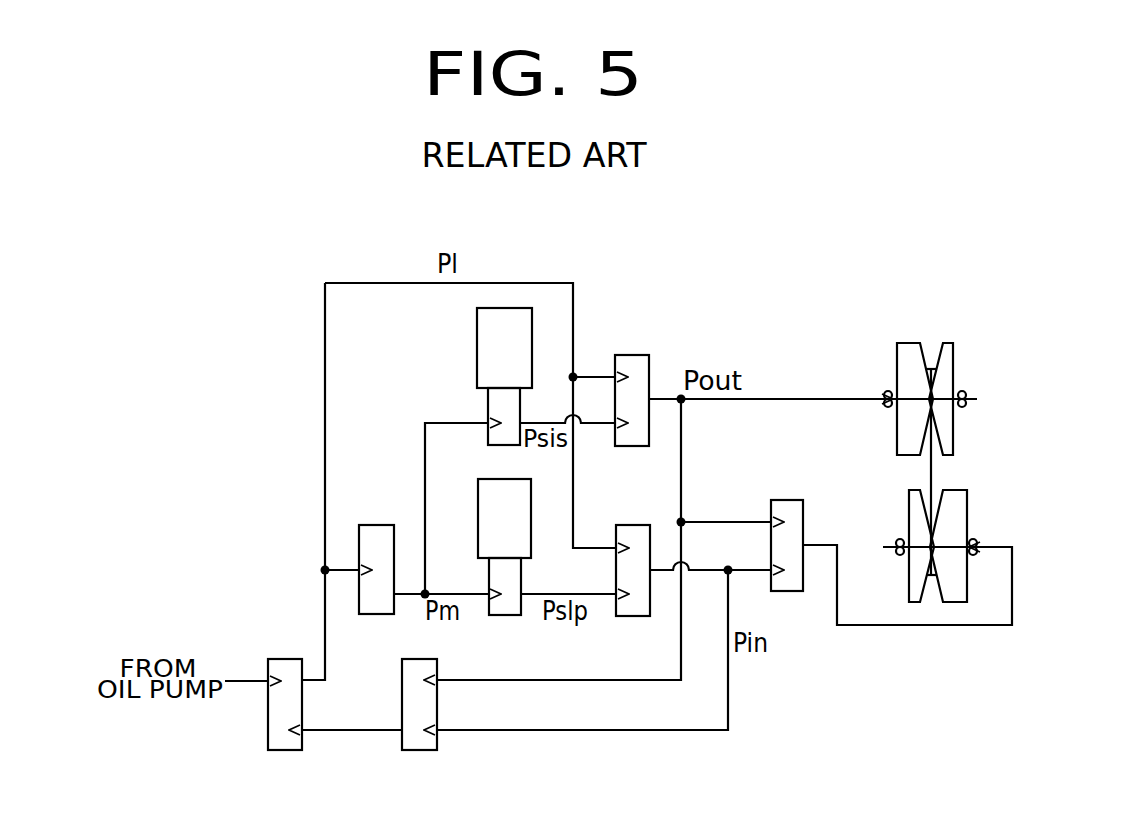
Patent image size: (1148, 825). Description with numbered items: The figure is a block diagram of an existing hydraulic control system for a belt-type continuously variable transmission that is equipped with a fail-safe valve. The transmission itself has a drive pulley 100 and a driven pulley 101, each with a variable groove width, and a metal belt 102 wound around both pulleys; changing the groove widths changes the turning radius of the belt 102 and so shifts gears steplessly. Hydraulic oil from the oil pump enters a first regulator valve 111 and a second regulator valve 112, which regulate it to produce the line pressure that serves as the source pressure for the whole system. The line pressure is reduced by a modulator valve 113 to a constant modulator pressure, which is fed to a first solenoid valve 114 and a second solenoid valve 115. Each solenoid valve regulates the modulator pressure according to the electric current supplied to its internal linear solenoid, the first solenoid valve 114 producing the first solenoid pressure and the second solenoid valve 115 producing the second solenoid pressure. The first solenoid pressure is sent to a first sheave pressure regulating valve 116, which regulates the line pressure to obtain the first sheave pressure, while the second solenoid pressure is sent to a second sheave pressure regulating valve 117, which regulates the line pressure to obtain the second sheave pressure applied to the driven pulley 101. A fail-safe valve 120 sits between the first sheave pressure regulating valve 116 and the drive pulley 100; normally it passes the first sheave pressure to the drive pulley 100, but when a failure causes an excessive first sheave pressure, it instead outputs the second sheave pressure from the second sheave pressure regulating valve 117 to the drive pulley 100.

The drive pulley 100 is at (909, 506).
The driven pulley 101 is at (897, 357).
The belt 102 is at (931, 471).
The first regulator valve 111 is at (268, 726).
The second regulator valve 112 is at (402, 705).
The modulator valve 113 is at (375, 525).
The first solenoid valve 114 is at (478, 507).
The second solenoid valve 115 is at (477, 345).
The first sheave pressure regulating valve 116 is at (632, 525).
The second sheave pressure regulating valve 117 is at (632, 355).
The fail-safe valve 120 is at (790, 500).